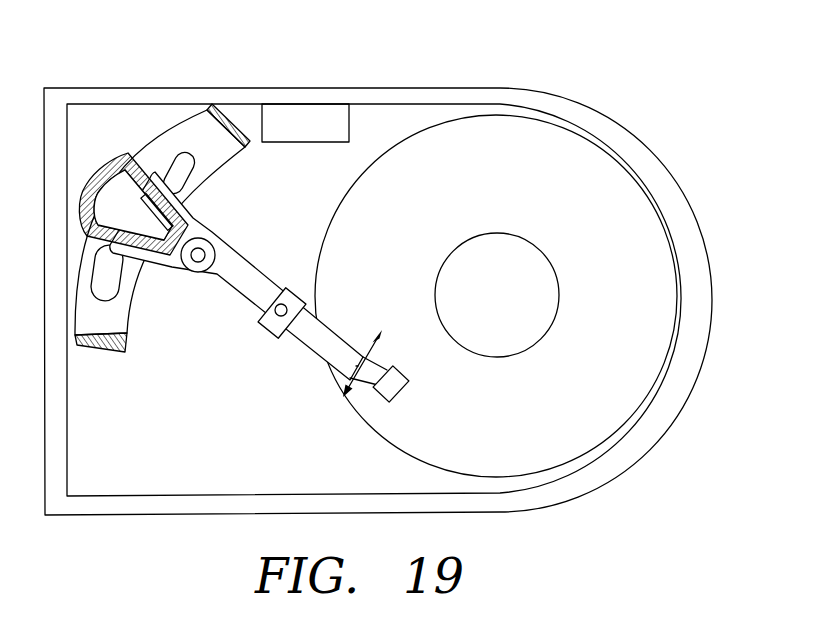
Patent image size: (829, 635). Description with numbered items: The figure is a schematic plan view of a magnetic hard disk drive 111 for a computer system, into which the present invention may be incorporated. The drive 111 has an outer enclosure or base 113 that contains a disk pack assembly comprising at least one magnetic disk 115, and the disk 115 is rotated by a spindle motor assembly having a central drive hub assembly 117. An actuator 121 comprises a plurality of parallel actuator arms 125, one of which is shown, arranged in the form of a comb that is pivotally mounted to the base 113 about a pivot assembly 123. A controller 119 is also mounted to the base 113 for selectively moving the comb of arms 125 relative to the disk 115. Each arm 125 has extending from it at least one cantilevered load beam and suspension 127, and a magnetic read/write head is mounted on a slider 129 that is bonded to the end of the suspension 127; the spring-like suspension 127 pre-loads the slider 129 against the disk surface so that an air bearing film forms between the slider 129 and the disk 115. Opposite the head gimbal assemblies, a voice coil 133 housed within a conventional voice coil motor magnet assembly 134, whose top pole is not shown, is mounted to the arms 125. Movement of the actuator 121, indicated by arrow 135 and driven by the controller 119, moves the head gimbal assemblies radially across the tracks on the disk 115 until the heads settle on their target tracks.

The hard disk drive 111 is at (394, 265).
The base 113 is at (330, 42).
The magnetic disk 115 is at (625, 213).
The central drive hub assembly 117 is at (500, 233).
The controller 119 is at (283, 112).
The actuator 121 is at (374, 300).
The pivot assembly 123 is at (218, 236).
The actuator arm 125 is at (248, 256).
The load beam and suspension 127 is at (333, 330).
The slider 129 is at (402, 397).
The voice coil 133 is at (100, 174).
The voice coil motor magnet assembly 134 is at (213, 148).
The arrow 135 is at (357, 366).